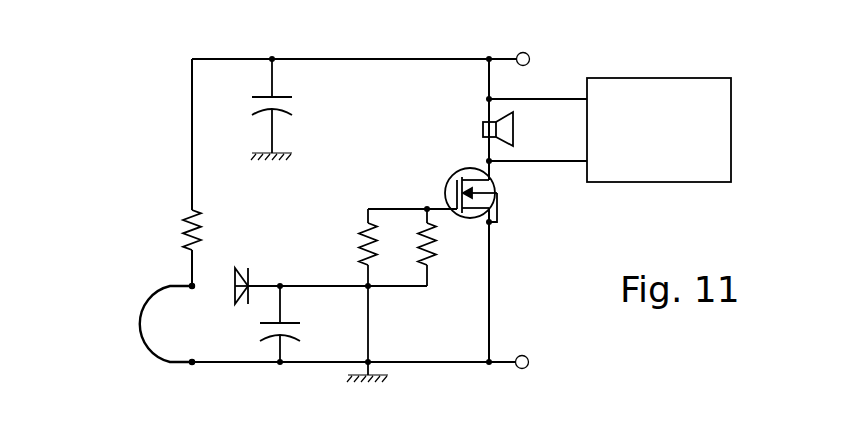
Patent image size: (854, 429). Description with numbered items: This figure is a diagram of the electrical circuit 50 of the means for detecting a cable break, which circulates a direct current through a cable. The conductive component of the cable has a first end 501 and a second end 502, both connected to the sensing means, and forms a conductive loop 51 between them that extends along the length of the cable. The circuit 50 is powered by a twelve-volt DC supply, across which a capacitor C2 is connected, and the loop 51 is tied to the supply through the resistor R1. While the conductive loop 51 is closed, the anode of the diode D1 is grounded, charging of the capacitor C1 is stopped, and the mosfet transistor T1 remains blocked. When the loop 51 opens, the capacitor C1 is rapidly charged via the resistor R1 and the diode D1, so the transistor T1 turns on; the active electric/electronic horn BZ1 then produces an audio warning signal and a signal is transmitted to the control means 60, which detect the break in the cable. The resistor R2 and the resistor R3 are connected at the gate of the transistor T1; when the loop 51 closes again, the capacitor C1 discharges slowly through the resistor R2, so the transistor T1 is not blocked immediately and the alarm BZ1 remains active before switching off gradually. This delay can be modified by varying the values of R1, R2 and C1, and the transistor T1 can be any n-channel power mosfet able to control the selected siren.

The electrical circuit 50 is at (136, 146).
The resistor R1 is at (190, 213).
The conductive loop 51 is at (120, 325).
The first end 501 is at (192, 283).
The second end 502 is at (192, 365).
The diode D1 is at (238, 268).
The capacitor C1 is at (292, 335).
The capacitor C2 is at (280, 97).
The resistor R2 is at (362, 226).
The resistor R3 is at (420, 226).
The mosfet transistor T1 is at (497, 190).
The electric/electronic horn BZ1 is at (483, 129).
The control means 60 is at (659, 130).